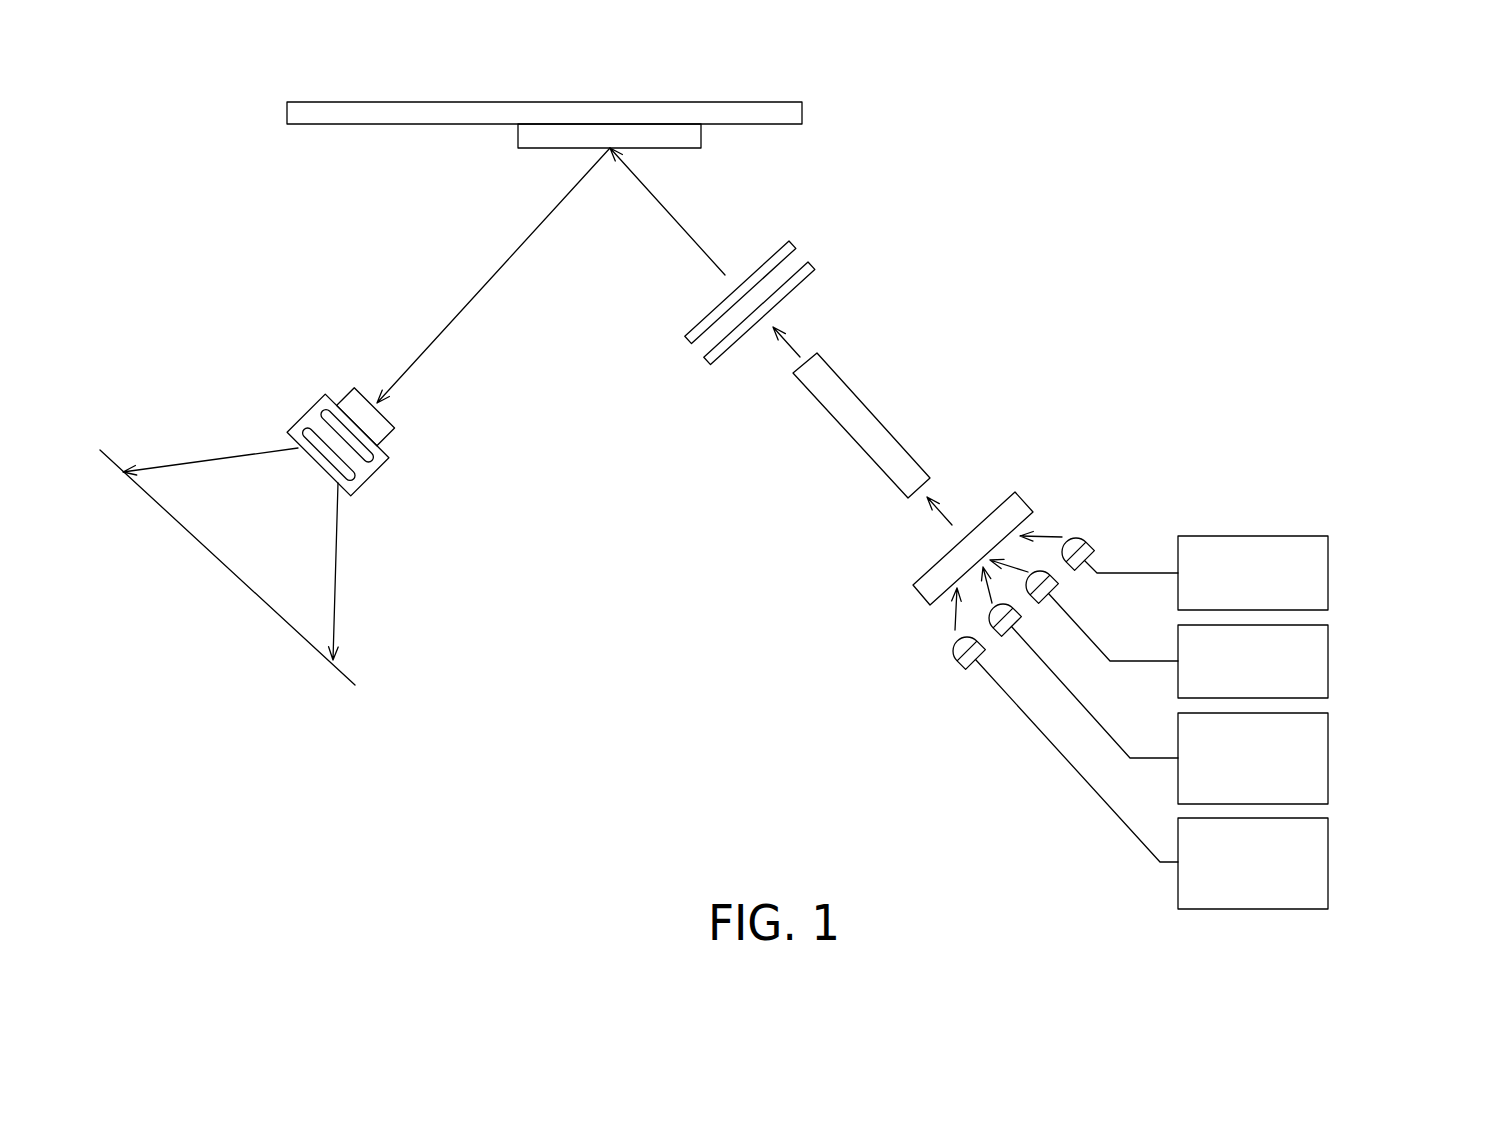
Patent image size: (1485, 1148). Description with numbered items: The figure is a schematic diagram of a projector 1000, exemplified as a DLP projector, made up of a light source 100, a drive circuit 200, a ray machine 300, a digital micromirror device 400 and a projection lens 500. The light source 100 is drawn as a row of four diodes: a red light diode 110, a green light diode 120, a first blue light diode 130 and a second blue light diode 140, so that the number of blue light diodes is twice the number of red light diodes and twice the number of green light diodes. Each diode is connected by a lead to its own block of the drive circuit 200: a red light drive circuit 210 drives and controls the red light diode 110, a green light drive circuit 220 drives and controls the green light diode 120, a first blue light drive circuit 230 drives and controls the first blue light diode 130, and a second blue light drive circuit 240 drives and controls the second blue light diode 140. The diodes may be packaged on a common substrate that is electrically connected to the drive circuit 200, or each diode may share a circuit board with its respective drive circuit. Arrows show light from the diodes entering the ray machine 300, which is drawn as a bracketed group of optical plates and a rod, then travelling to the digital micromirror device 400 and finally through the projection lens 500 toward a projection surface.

The projector 1000 is at (1465, 86).
The light source 100 is at (800, 570).
The red light diode 110 is at (1076, 571).
The green light diode 120 is at (1048, 605).
The first blue light diode 130 is at (989, 620).
The second blue light diode 140 is at (951, 650).
The drive circuit 200 is at (1412, 548).
The red light drive circuit 210 is at (1330, 569).
The green light drive circuit 220 is at (1330, 657).
The first blue light drive circuit 230 is at (1330, 756).
The second blue light drive circuit 240 is at (1330, 861).
The ray machine 300 is at (1057, 495).
The digital micromirror device 400 is at (560, 137).
The projection lens 500 is at (312, 413).